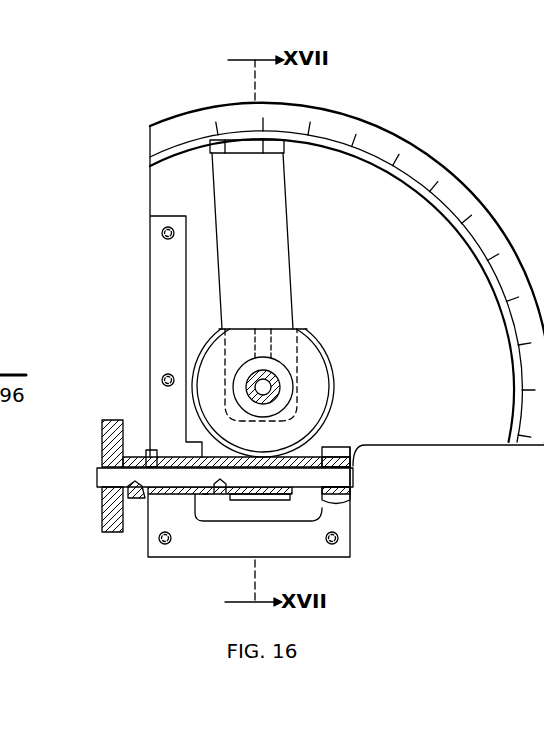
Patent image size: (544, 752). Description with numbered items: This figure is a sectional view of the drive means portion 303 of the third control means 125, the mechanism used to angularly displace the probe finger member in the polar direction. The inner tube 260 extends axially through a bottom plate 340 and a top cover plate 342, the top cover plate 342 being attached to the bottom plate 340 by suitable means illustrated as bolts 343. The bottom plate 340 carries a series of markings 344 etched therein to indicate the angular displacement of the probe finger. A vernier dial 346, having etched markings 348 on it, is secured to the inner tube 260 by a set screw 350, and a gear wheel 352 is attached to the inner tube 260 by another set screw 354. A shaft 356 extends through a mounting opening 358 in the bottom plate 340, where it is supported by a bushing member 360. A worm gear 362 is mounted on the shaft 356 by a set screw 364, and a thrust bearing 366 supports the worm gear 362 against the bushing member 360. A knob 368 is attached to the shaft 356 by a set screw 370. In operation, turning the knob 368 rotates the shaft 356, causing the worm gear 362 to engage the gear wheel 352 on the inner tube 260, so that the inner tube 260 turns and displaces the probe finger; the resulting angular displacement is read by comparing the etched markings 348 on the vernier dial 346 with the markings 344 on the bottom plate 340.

The bottom plate 340 is at (427, 152).
The top cover plate 342 is at (481, 242).
The markings 344 is at (440, 188).
The vernier dial 346 is at (293, 229).
The etched markings 348 is at (274, 144).
The set screw 350 is at (291, 383).
The gear wheel 352 is at (327, 423).
The set screw 354 is at (262, 335).
The inner tube 260 is at (281, 393).
The bolts 343 is at (160, 237).
The shaft 356 is at (338, 478).
The mounting opening 358 is at (172, 470).
The bushing member 360 is at (350, 462).
The worm gear 362 is at (280, 496).
The set screw 364 is at (222, 488).
The thrust bearing 366 is at (205, 495).
The knob 368 is at (100, 495).
The set screw 370 is at (137, 500).
The drive means portion 303 is at (487, 526).
The third control means 125 is at (63, 499).